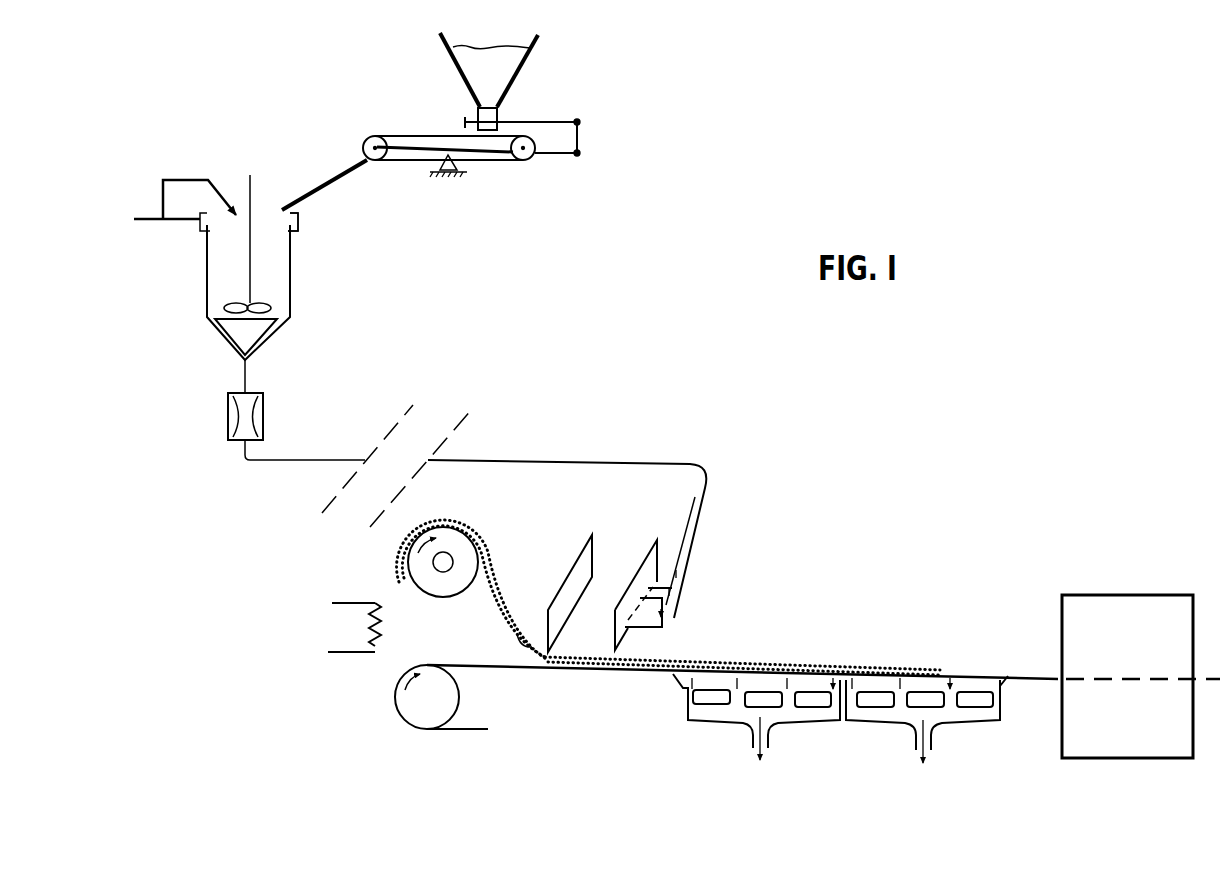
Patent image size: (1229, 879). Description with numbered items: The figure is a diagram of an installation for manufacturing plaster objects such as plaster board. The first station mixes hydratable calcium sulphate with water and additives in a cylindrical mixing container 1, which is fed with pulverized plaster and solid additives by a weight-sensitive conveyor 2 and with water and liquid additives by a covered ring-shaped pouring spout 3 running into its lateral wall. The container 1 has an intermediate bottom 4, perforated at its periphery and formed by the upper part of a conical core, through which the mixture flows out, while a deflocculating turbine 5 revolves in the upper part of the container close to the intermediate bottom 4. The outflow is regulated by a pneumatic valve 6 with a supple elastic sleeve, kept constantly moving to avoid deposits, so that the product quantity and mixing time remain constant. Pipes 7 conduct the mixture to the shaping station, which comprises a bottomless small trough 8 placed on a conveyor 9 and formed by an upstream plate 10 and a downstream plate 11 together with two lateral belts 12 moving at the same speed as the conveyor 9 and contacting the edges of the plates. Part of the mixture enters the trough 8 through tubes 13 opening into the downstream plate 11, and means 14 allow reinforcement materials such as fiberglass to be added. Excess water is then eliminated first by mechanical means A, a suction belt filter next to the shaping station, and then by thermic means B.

The mixing container 1 is at (297, 277).
The weight-sensitive conveyor 2 is at (507, 165).
The covered ring-shaped pouring spout 3 is at (306, 230).
The intermediate bottom 4 is at (248, 337).
The deflocculating turbine 5 is at (277, 312).
The pneumatic valve 6 is at (270, 421).
The pipes 7 is at (495, 458).
The bottomless small trough 8 is at (668, 524).
The conveyor 9 is at (505, 670).
The upstream plate 10 is at (561, 613).
The downstream plate 11 is at (626, 620).
The lateral belts 12 is at (348, 620).
The tubes 13 is at (688, 590).
The means of adding reinforcement materials 14 is at (535, 640).
The mechanical means A is at (1000, 533).
The thermic means B is at (1215, 535).